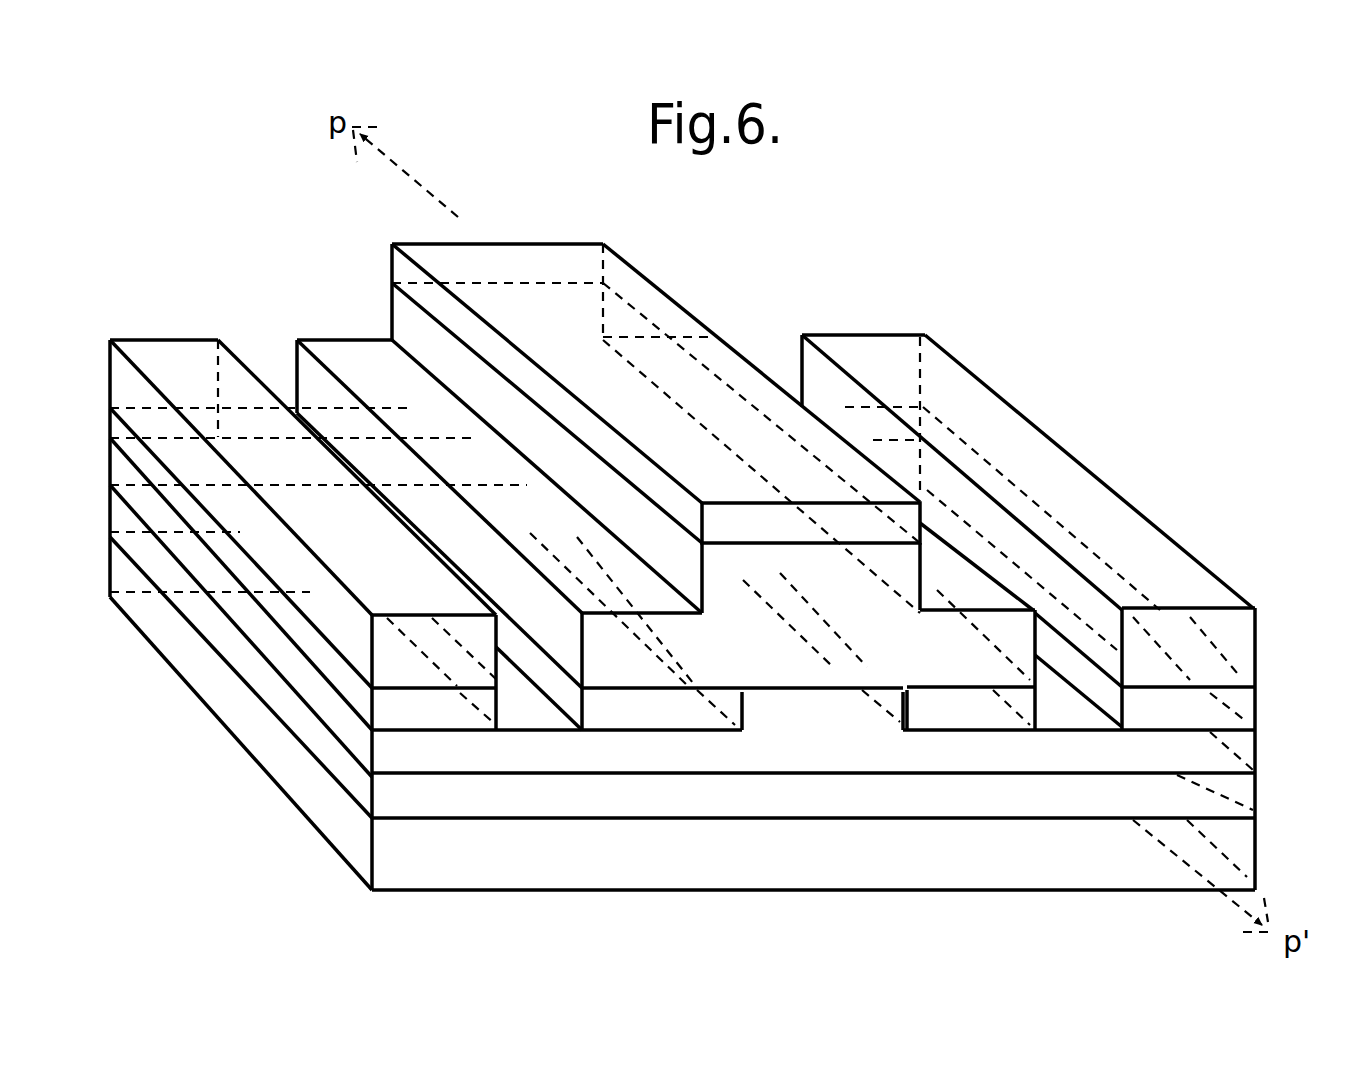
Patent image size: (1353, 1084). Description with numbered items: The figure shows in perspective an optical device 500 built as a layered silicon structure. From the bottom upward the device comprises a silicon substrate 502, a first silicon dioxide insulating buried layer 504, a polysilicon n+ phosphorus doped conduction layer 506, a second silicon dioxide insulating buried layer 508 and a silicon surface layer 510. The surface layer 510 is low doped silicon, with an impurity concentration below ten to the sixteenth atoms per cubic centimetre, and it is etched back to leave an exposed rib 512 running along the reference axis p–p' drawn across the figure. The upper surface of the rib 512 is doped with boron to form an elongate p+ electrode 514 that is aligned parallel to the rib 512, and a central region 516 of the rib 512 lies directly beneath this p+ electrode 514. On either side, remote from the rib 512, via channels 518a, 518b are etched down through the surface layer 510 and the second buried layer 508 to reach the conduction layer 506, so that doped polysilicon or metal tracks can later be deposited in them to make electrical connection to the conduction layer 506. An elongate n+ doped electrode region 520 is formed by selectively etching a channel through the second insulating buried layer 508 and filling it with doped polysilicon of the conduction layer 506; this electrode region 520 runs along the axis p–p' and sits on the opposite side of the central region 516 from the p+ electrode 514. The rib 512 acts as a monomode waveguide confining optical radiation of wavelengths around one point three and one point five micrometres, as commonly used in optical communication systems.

The optical device 500 is at (835, 268).
The silicon substrate 502 is at (903, 858).
The first silicon dioxide insulating buried layer 504 is at (383, 807).
The polysilicon n+ phosphorus doped conduction layer 506 is at (390, 758).
The second silicon dioxide insulating buried layer 508 is at (370, 735).
The silicon surface layer 510 is at (370, 683).
The rib 512 is at (417, 338).
The p+ electrode 514 is at (913, 497).
The central region 516 is at (802, 595).
The via channel 518a is at (538, 713).
The via channel 518b is at (1060, 693).
The n+ doped electrode region 520 is at (830, 717).